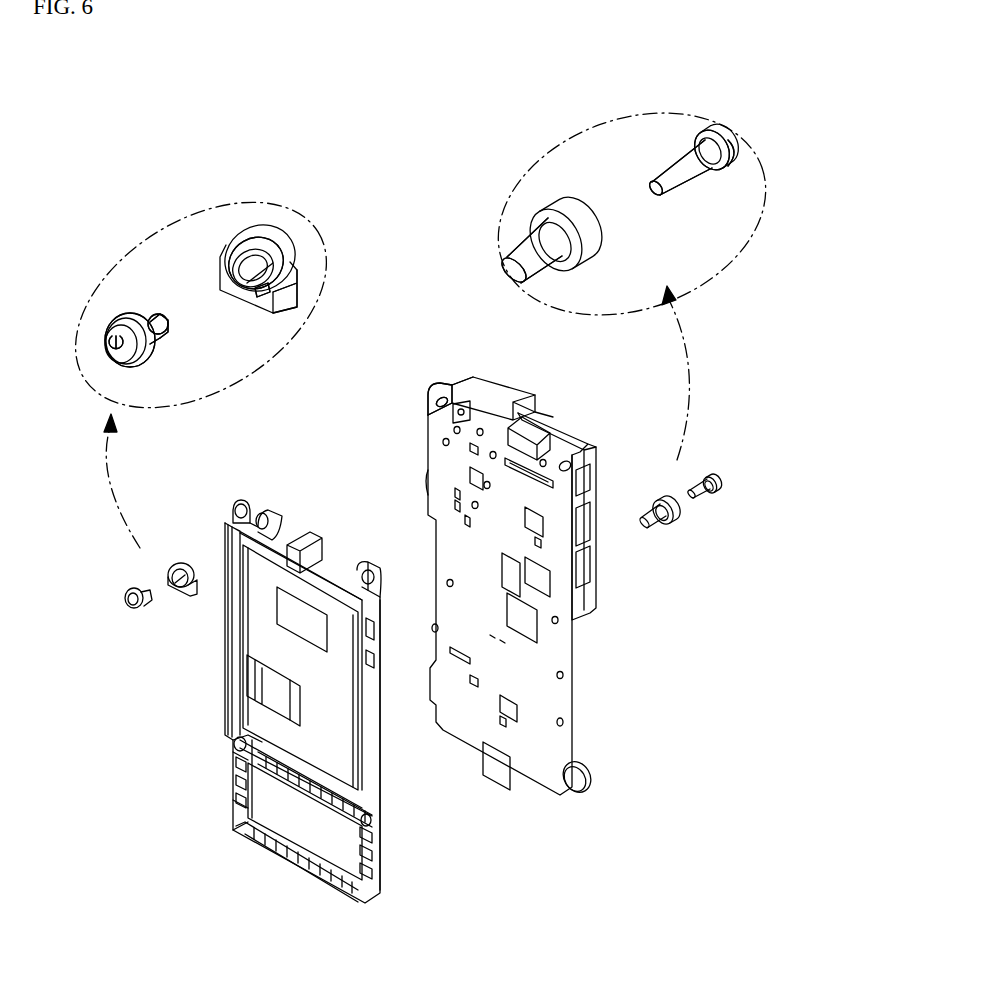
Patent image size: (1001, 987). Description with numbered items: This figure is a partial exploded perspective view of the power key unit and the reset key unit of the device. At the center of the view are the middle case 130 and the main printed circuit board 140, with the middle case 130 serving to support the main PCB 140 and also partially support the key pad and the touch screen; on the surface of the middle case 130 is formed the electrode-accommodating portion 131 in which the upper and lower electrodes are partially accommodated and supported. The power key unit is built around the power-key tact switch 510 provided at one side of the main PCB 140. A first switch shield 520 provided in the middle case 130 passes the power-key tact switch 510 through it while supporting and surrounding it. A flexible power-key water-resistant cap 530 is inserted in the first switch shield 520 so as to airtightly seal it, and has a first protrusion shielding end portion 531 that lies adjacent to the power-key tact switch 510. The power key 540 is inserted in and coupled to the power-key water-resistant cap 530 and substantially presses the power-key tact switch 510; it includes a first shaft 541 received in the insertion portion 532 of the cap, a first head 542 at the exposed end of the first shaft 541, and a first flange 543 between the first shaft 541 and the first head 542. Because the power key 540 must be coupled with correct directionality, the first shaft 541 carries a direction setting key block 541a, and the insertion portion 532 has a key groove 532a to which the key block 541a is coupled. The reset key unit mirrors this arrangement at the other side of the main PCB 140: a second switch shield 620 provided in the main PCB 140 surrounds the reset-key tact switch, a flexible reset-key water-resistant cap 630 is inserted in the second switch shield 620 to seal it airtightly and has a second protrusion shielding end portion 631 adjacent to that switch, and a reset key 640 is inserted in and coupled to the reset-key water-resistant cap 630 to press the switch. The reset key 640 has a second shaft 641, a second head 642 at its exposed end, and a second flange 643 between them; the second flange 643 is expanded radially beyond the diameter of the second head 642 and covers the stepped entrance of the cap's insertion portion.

The middle case 130 is at (378, 774).
The electrode-accommodating portion 131 is at (342, 646).
The main printed circuit board 140 is at (557, 655).
The power-key tact switch 510 is at (434, 403).
The first switch shield 520 is at (268, 508).
The power-key water-resistant cap 530 is at (226, 226).
The first protrusion shielding end portion 531 is at (293, 249).
The insertion portion 532 is at (223, 254).
The key groove 532a is at (260, 287).
The power key 540 is at (109, 302).
The first shaft 541 is at (168, 328).
The direction setting key block 541a is at (160, 342).
The first head 542 is at (113, 358).
The first flange 543 is at (136, 318).
The second switch shield 620 is at (590, 530).
The reset-key water-resistant cap 630 is at (548, 188).
The second protrusion shielding end portion 631 is at (530, 276).
The reset key 640 is at (681, 114).
The second shaft 641 is at (688, 174).
The second head 642 is at (733, 147).
The second flange 643 is at (733, 170).